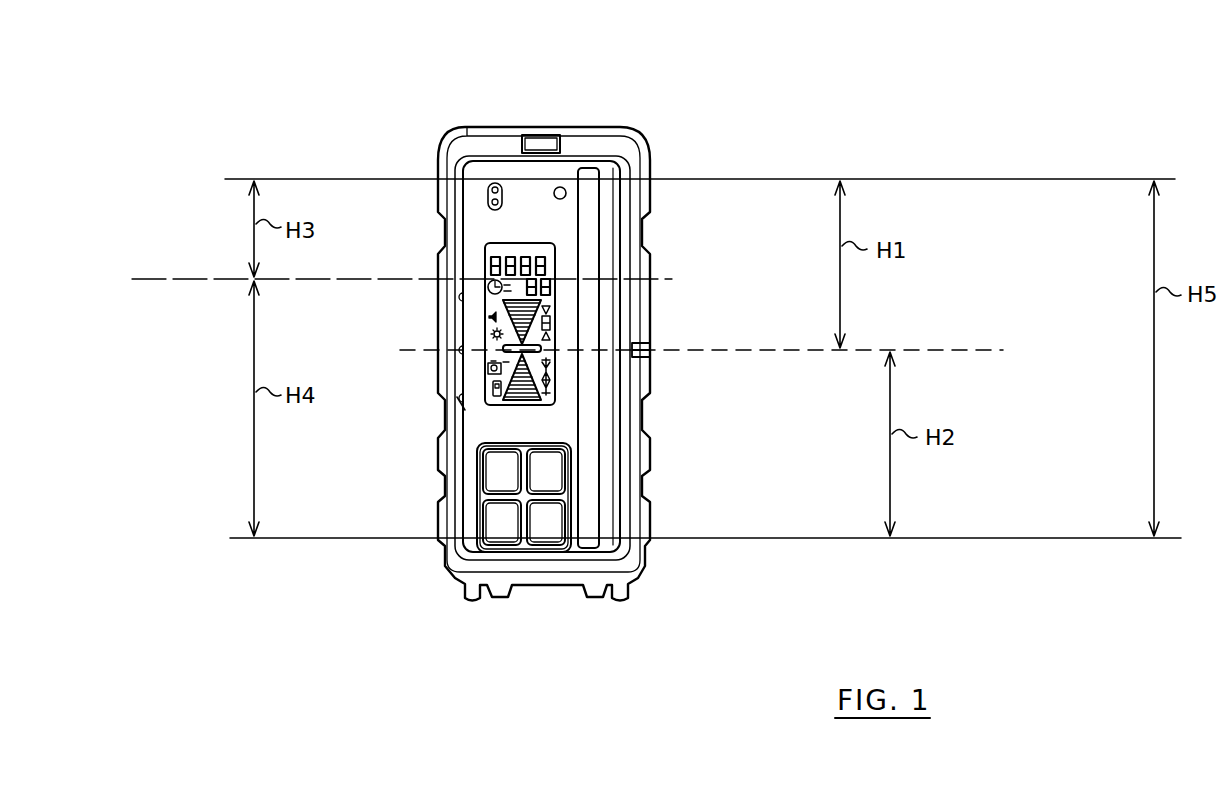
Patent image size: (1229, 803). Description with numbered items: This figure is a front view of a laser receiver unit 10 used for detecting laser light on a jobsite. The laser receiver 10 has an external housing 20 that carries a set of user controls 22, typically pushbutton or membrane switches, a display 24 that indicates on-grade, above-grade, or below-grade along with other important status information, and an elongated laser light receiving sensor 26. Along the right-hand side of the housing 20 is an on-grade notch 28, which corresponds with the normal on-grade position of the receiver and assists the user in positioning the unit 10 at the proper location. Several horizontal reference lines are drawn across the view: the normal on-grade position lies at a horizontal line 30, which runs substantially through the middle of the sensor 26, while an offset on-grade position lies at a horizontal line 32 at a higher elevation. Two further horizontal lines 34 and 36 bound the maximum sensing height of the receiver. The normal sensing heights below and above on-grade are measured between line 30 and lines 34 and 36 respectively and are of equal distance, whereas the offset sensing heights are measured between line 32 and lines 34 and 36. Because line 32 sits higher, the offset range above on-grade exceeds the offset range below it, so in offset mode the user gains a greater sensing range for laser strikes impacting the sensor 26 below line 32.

The laser receiver unit 10 is at (679, 87).
The external housing 20 is at (647, 515).
The user controls 22 is at (548, 523).
The display 24 is at (502, 426).
The laser light receiving sensor 26 is at (600, 220).
The on-grade notch 28 is at (645, 353).
The normal on-grade line 30 is at (999, 348).
The offset on-grade line 32 is at (189, 278).
The upper sensing limit line 34 is at (1080, 177).
The lower sensing limit line 36 is at (1108, 538).